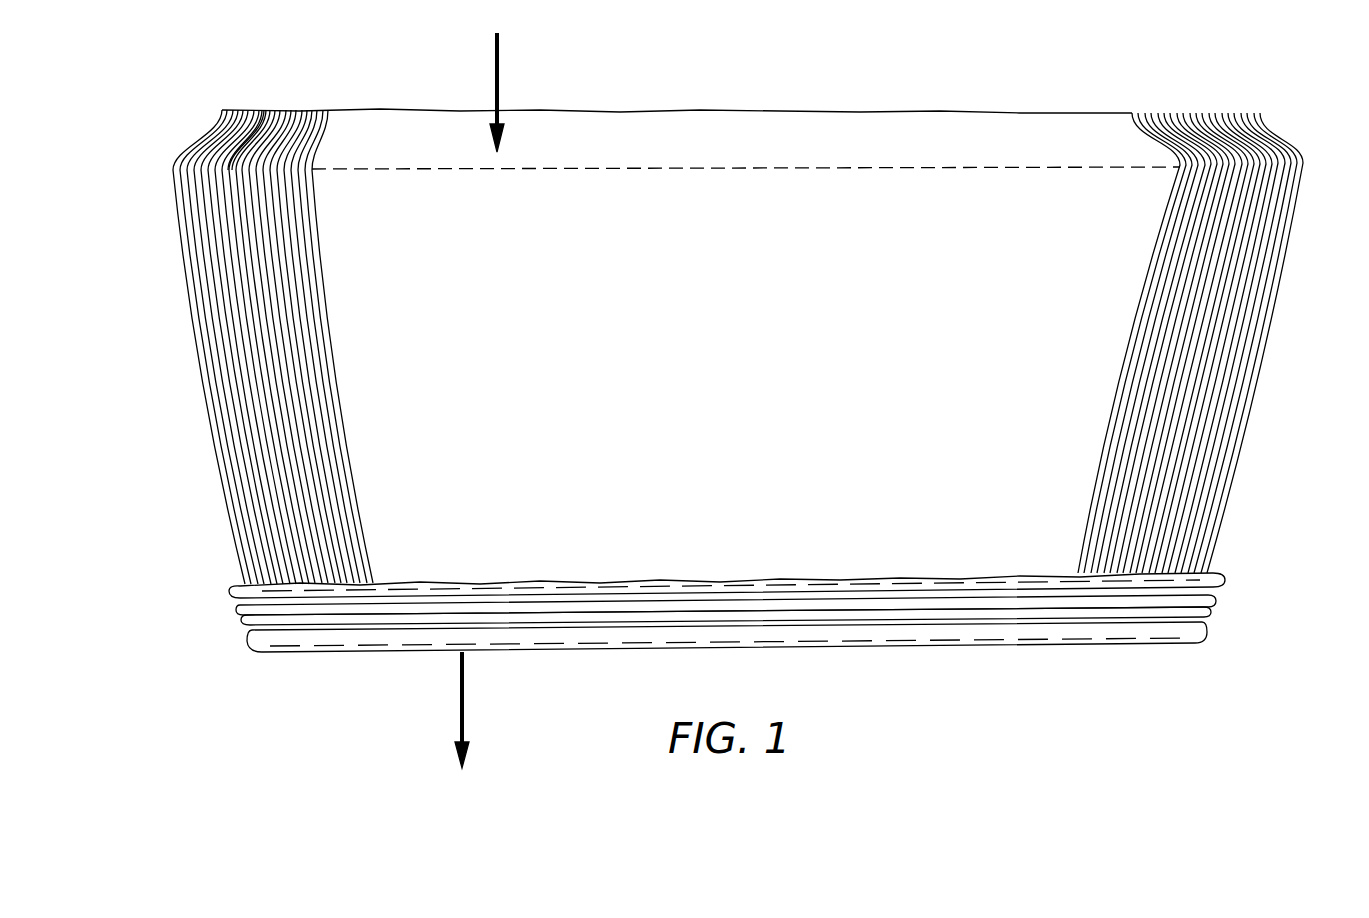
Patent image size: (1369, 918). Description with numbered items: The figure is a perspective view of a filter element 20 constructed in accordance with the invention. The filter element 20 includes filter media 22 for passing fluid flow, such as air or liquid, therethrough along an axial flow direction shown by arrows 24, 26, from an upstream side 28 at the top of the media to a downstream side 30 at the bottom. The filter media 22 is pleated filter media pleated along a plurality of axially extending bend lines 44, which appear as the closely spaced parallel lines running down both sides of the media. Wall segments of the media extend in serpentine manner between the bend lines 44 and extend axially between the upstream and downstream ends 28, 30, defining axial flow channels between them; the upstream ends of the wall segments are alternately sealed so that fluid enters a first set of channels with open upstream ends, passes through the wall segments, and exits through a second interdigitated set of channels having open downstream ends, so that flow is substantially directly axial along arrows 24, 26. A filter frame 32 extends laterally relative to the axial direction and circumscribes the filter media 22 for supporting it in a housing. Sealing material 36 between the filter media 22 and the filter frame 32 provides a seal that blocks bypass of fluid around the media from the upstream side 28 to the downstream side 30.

The filter element 20 is at (717, 377).
The filter media 22 is at (232, 452).
The arrow 24 is at (498, 68).
The arrow 26 is at (463, 706).
The upstream side 28 is at (268, 127).
The downstream side 30 is at (689, 626).
The filter frame 32 is at (250, 639).
The sealing material 36 is at (250, 588).
The bend lines 44 is at (1273, 270).